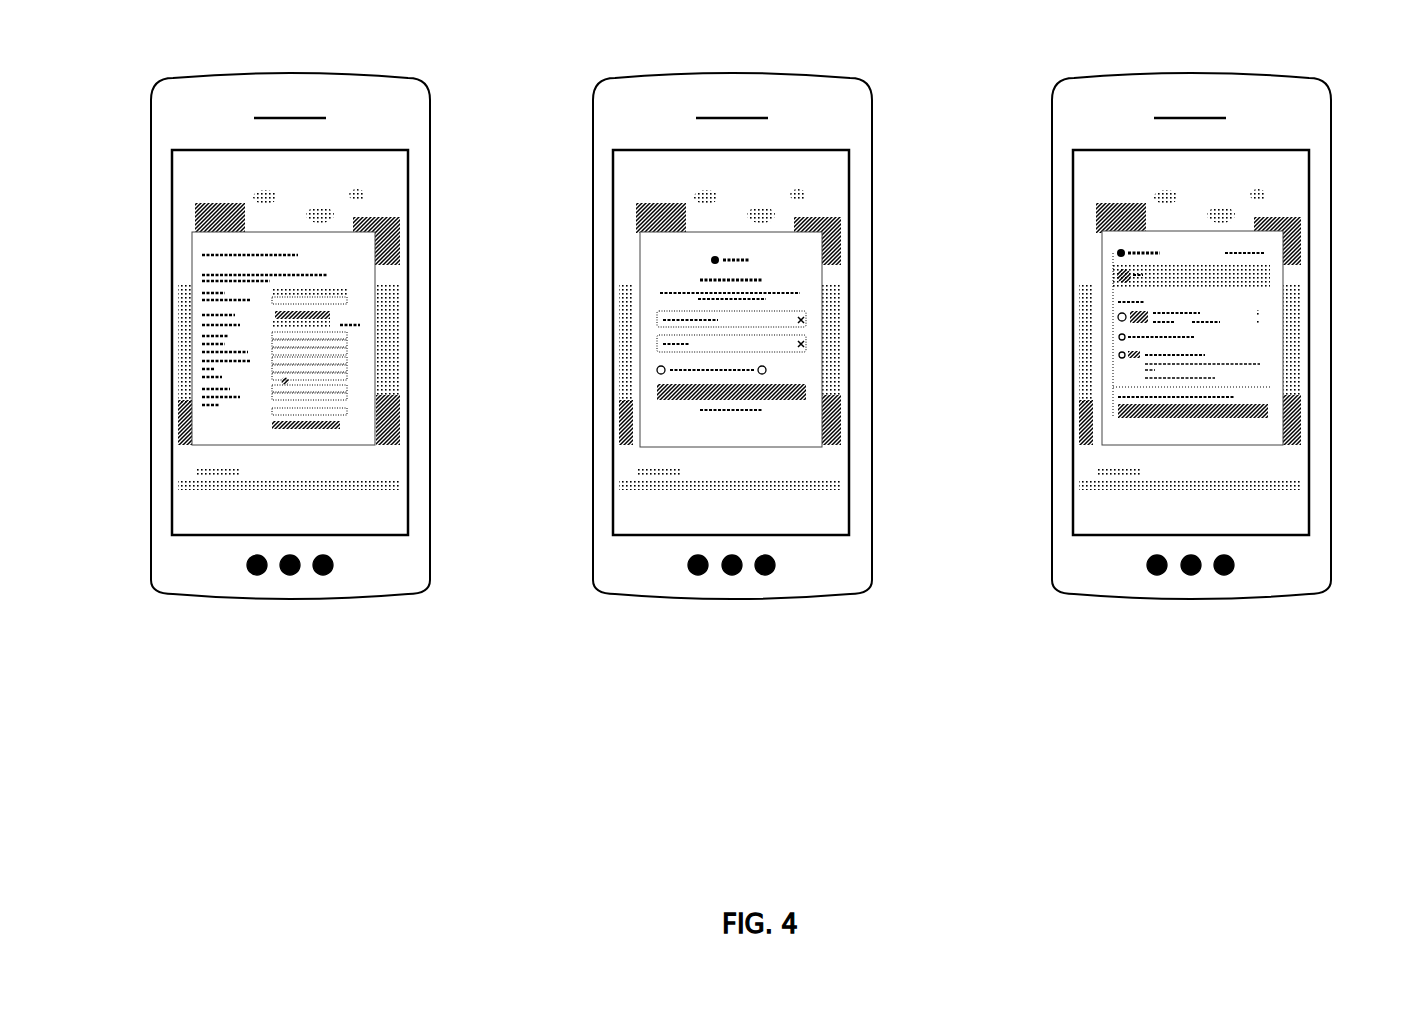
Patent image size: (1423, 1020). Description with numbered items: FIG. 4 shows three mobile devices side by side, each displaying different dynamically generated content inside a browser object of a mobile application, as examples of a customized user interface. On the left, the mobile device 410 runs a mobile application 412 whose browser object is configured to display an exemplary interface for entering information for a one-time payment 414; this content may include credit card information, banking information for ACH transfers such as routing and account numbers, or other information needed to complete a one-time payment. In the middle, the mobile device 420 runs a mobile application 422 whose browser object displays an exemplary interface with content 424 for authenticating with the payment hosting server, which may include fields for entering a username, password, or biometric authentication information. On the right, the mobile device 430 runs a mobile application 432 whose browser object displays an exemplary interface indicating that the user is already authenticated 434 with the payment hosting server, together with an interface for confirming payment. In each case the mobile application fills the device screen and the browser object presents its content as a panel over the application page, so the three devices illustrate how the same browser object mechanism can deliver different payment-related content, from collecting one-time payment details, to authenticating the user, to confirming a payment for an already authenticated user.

The mobile device 410 is at (255, 75).
The mobile application 412 is at (188, 150).
The interface for entering information for a one-time payment 414 is at (353, 446).
The mobile device 420 is at (732, 306).
The mobile application 422 is at (700, 311).
The content for authenticating with the payment hosting server 424 is at (797, 446).
The mobile device 430 is at (1191, 306).
The mobile application 432 is at (1149, 311).
The interface indicating a user is already authenticated 434 is at (1265, 447).